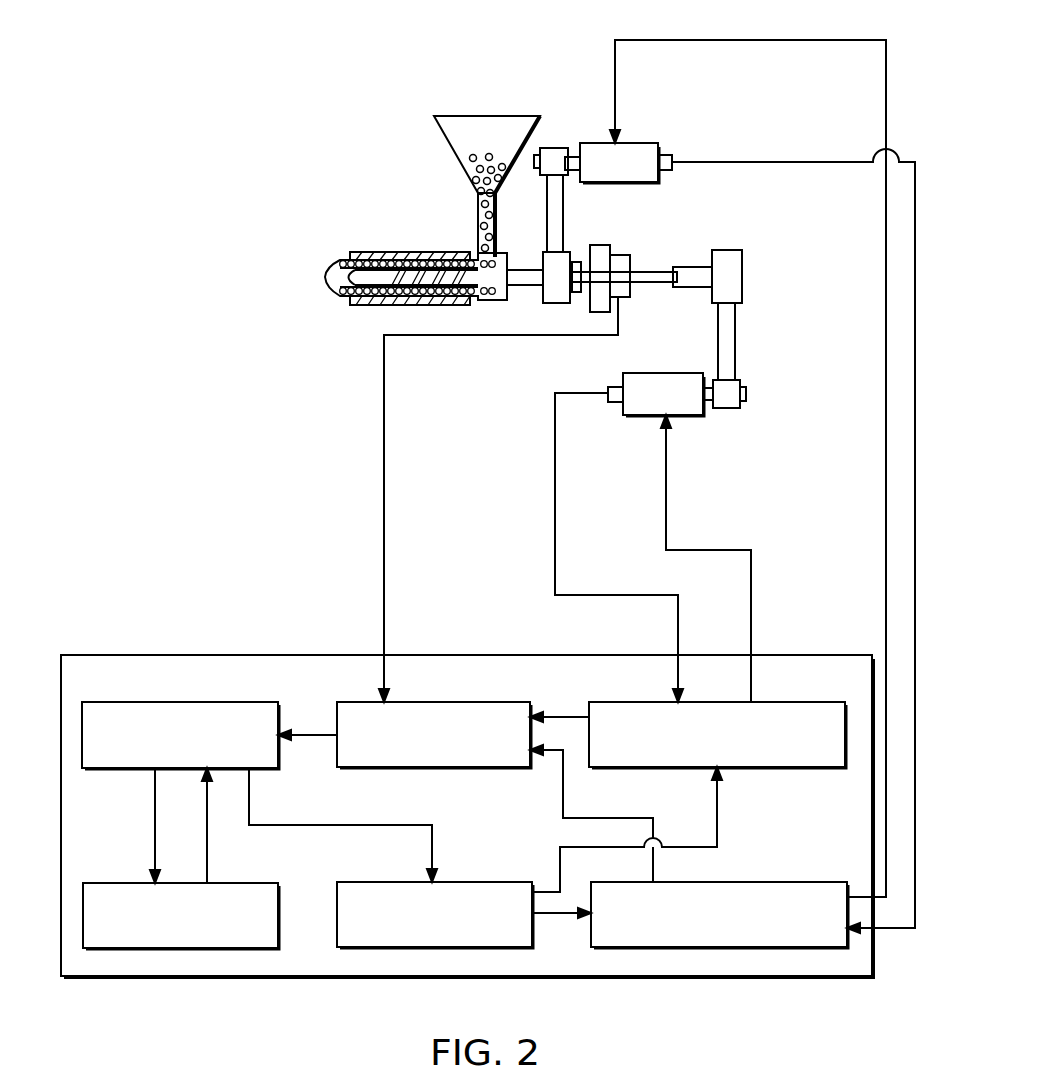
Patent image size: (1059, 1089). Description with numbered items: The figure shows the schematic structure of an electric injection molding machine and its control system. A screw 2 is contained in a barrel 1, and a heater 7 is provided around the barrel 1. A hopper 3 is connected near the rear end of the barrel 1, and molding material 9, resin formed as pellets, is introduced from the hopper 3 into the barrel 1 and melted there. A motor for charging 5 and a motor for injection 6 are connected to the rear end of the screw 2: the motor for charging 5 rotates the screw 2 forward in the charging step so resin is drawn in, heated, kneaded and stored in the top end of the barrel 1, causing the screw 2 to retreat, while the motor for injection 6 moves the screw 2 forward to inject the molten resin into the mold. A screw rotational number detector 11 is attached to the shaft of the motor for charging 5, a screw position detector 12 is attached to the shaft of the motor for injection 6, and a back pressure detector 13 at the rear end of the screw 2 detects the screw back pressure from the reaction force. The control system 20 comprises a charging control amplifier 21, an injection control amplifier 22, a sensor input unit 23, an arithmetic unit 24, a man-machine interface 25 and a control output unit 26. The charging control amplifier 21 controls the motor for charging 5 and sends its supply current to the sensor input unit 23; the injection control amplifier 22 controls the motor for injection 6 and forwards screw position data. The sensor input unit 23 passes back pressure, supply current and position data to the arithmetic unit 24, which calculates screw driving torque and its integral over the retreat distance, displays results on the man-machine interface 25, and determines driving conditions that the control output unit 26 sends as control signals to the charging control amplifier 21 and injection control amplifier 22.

The barrel 1 is at (407, 258).
The screw 2 is at (362, 277).
The hopper 3 is at (437, 128).
The motor for charging 5 is at (645, 143).
The motor for injection 6 is at (697, 415).
The heater 7 is at (435, 253).
The molding material 9 is at (490, 160).
The screw rotational number detector 11 is at (672, 155).
The screw position detector 12 is at (608, 390).
The back pressure detector 13 is at (630, 265).
The control system 20 is at (310, 978).
The charging control amplifier 21 is at (803, 882).
The injection control amplifier 22 is at (802, 702).
The sensor input unit 23 is at (488, 702).
The arithmetic unit 24 is at (172, 702).
The man-machine interface 25 is at (138, 883).
The control output unit 26 is at (490, 882).